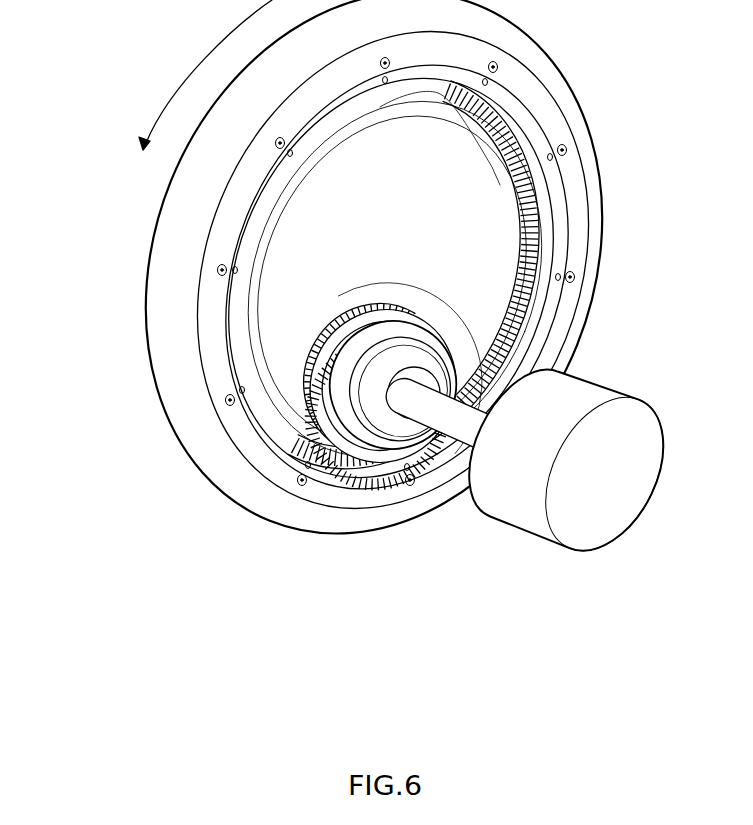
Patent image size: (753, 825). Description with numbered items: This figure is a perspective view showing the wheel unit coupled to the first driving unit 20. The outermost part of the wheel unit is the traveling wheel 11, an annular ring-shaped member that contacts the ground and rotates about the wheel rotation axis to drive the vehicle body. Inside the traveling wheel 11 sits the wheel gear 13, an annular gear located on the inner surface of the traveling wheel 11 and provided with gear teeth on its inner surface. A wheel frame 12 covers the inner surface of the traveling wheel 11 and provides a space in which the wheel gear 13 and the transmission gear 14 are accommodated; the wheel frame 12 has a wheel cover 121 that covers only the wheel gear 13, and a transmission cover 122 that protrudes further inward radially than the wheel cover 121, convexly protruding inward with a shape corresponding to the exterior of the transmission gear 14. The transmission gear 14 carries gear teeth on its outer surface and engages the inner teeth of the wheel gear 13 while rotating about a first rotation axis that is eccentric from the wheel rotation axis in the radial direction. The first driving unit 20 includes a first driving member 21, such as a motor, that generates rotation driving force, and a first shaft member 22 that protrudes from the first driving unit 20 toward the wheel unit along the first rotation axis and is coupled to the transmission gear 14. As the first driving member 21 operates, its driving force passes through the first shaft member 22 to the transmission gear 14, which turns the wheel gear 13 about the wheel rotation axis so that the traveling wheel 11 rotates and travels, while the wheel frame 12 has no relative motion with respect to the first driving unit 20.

The traveling wheel 11 is at (143, 190).
The wheel frame 12 is at (479, 249).
The wheel cover 121 is at (463, 113).
The transmission cover 122 is at (360, 282).
The wheel gear 13 is at (512, 163).
The transmission gear 14 is at (277, 346).
The first driving unit 20 is at (536, 514).
The first driving member 21 is at (520, 519).
The first shaft member 22 is at (456, 434).